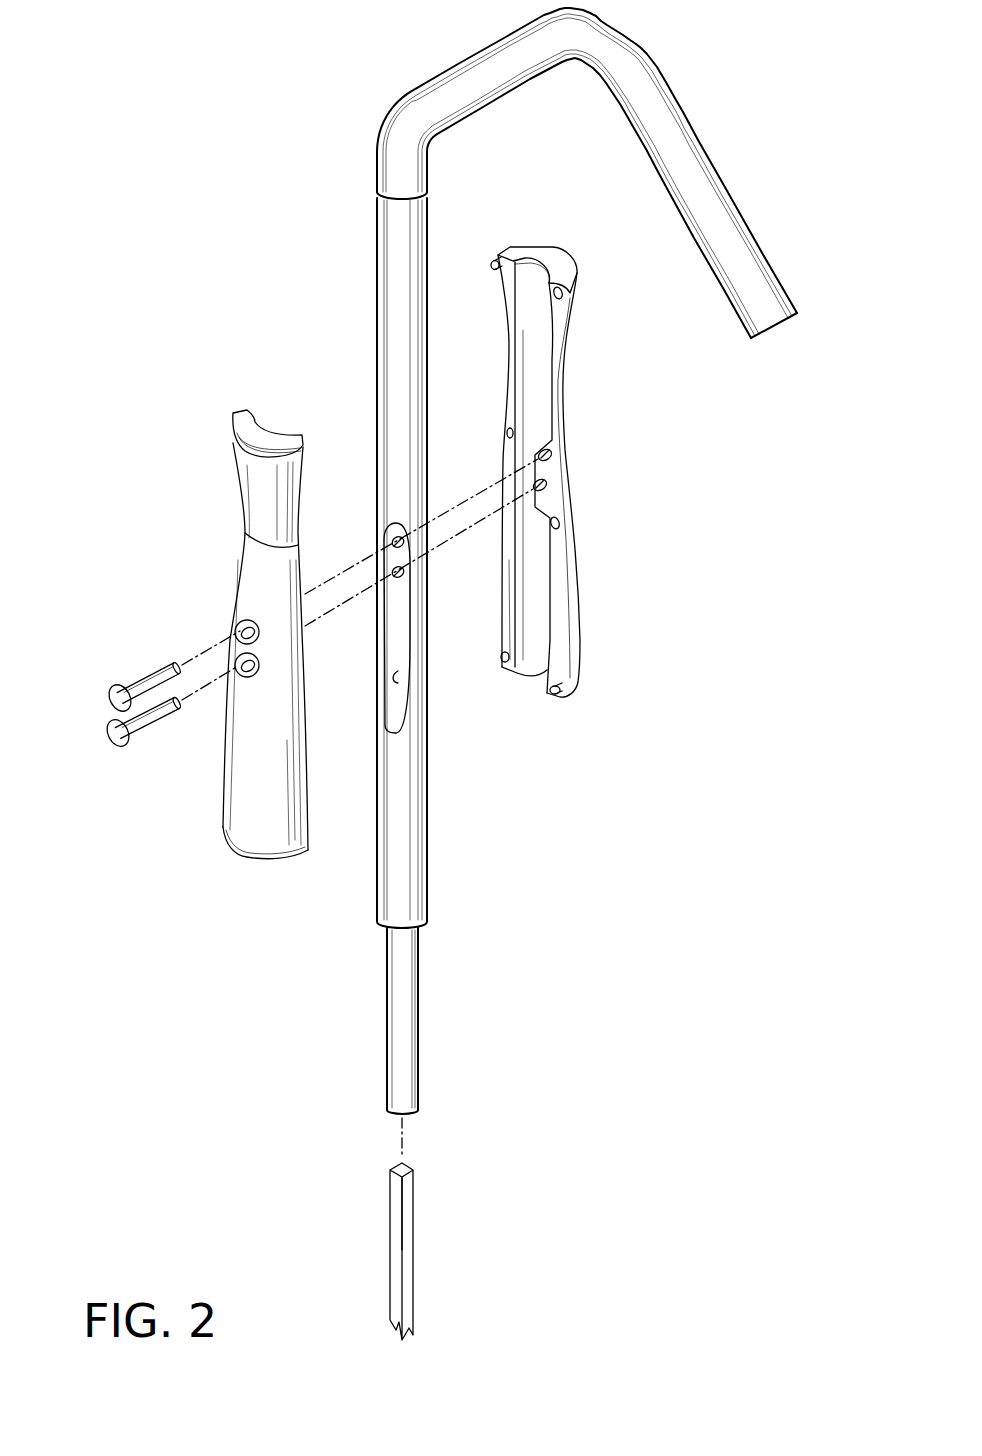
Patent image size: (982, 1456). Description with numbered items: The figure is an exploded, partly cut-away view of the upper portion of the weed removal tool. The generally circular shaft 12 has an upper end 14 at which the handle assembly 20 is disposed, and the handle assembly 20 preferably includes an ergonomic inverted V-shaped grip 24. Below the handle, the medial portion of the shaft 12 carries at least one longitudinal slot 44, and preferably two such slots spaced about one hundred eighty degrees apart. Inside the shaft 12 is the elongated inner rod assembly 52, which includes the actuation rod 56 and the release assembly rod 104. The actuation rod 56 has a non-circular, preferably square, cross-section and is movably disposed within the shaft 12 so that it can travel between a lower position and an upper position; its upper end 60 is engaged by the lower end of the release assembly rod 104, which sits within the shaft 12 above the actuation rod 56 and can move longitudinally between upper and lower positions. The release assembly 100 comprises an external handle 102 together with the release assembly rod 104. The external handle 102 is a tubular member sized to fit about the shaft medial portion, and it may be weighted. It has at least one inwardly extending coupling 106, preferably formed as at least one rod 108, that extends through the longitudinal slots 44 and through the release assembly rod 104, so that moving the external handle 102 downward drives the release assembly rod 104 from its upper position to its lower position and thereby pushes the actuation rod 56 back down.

The shaft 12 is at (420, 371).
The upper end 14 is at (387, 297).
The handle assembly 20 is at (607, 29).
The grip 24 is at (458, 67).
The longitudinal slot 44 is at (396, 680).
The inner rod assembly 52 is at (608, 882).
The actuation rod 56 is at (410, 1305).
The upper end 60 is at (410, 1195).
The release assembly 100 is at (175, 597).
The external handle 102 is at (247, 518).
The release assembly rod 104 is at (388, 1061).
The coupling 106 is at (128, 775).
The rod 108 is at (142, 682).